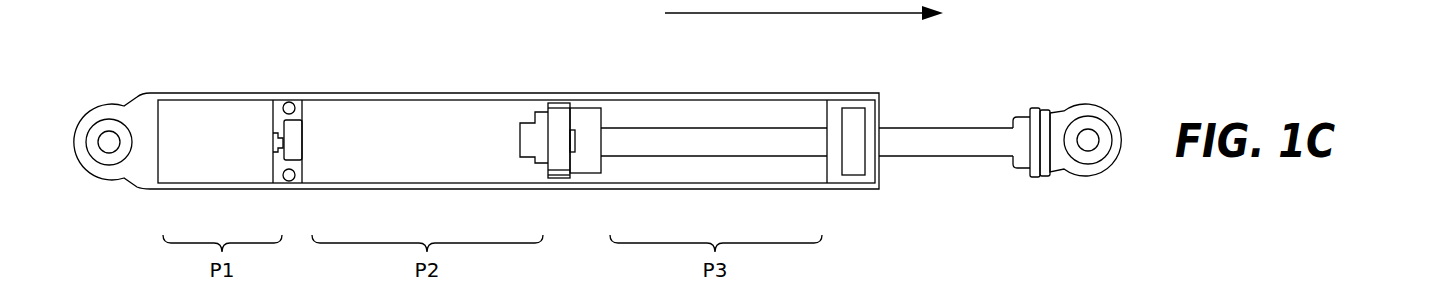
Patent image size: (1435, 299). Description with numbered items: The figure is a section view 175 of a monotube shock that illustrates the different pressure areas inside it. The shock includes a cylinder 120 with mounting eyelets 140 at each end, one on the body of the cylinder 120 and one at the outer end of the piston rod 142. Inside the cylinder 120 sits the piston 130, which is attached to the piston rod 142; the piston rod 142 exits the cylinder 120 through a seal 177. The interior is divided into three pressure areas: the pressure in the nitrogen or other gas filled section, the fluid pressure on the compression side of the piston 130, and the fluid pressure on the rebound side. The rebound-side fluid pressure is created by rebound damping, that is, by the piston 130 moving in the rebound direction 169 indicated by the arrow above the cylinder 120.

The cylinder 120 is at (497, 93).
The piston 130 is at (557, 160).
The mounting eyelets 140 is at (104, 104).
The piston rod 142 is at (927, 157).
The rebound direction 169 is at (717, 14).
The section view 175 is at (286, 27).
The seal 177 is at (853, 108).